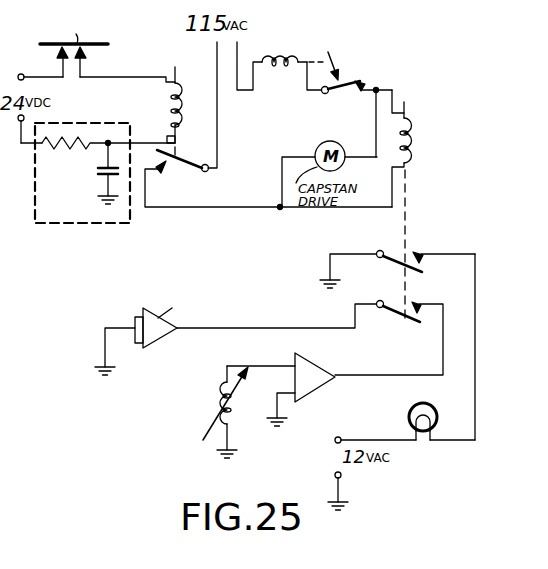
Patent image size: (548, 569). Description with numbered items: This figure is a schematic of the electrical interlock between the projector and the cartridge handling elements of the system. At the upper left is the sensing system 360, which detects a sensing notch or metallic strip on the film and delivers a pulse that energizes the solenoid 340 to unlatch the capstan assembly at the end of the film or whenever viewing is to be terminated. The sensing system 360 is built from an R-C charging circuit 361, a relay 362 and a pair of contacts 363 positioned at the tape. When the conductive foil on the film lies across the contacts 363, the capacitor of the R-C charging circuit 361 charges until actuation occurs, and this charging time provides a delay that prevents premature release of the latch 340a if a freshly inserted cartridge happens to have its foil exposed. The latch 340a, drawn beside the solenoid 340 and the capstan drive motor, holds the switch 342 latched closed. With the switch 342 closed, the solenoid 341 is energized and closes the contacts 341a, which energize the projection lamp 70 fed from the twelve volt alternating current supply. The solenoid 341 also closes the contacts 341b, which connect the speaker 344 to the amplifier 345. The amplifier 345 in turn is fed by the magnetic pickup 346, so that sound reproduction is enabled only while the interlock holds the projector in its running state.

The projection lamp 70 is at (437, 412).
The solenoid 340 is at (307, 50).
The latch 340a is at (336, 74).
The solenoid 341 is at (411, 140).
The contacts 341a is at (393, 252).
The contacts 341b is at (407, 323).
The switch 342 is at (346, 96).
The speaker 344 is at (160, 338).
The amplifier 345 is at (313, 388).
The magnetic pickup 346 is at (213, 403).
The sensing system 360 is at (100, 113).
The R-C charging circuit 361 is at (61, 204).
The relay 362 is at (172, 105).
The contacts 363 is at (50, 50).